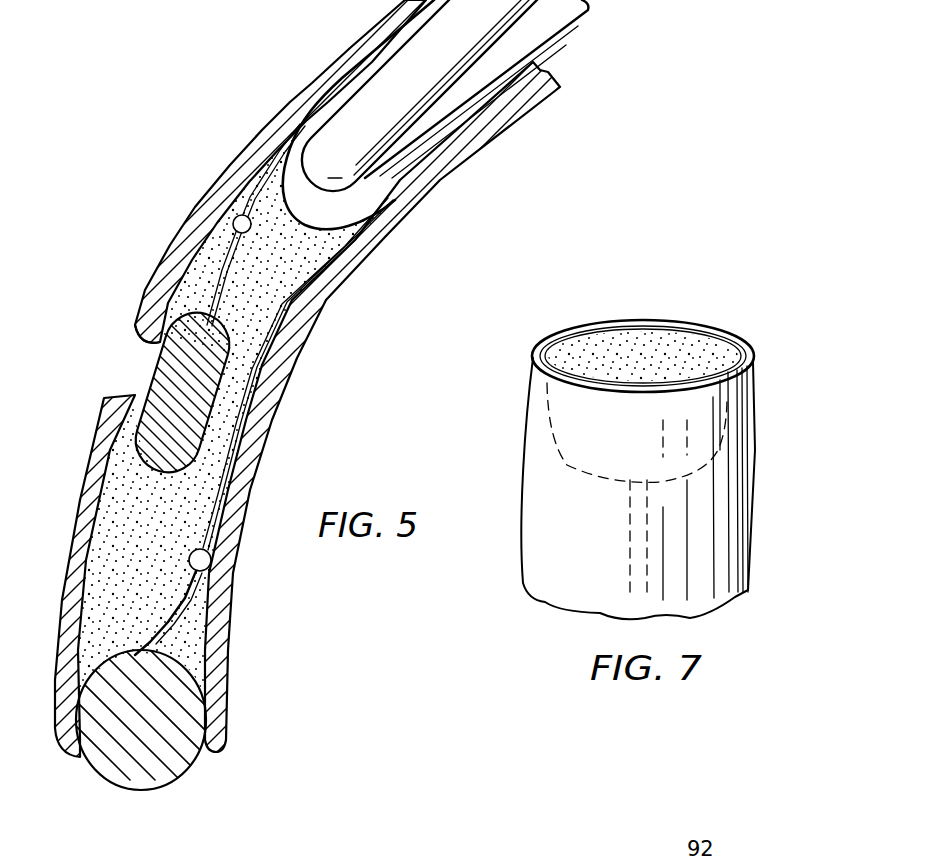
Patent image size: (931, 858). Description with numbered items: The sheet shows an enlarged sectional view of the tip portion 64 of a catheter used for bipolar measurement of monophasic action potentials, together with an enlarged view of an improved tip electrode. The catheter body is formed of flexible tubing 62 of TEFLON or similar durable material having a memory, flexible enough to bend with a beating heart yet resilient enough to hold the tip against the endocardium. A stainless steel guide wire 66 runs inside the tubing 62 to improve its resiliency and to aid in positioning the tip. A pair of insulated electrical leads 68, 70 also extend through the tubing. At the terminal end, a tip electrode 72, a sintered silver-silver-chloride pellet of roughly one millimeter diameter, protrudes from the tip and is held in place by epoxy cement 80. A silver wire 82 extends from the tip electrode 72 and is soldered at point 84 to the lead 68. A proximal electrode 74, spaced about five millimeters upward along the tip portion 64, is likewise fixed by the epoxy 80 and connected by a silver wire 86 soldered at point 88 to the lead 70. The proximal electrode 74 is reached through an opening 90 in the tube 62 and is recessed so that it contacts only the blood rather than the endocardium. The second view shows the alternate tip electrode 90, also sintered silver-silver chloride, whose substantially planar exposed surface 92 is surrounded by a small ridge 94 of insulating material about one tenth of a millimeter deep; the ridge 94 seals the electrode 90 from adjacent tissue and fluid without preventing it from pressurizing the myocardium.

In FIG. 5, the flexible tubing 62 is at (473, 155).
In FIG. 5, the tip portion 64 is at (329, 399).
In FIG. 5, the stainless steel guide wire 66 is at (548, 35).
In FIG. 5, the electrical lead 68 is at (233, 450).
In FIG. 5, the electrical lead 70 is at (373, 63).
In FIG. 5, the tip electrode 72 is at (178, 760).
In FIG. 5, the proximal electrode 74 is at (163, 367).
In FIG. 5, the epoxy cement 80 is at (143, 490).
In FIG. 5, the silver wire 82 is at (178, 620).
In FIG. 5, the solder point 84 is at (207, 565).
In FIG. 5, the silver wire 86 is at (227, 280).
In FIG. 5, the solder point 88 is at (236, 216).
In FIG. 5, the opening / tip electrode 90 is at (150, 334).
In FIG. 7, the opening / tip electrode 90 is at (650, 345).
In FIG. 7, the exposed surface 92 is at (621, 364).
In FIG. 7, the ridge 94 is at (737, 347).